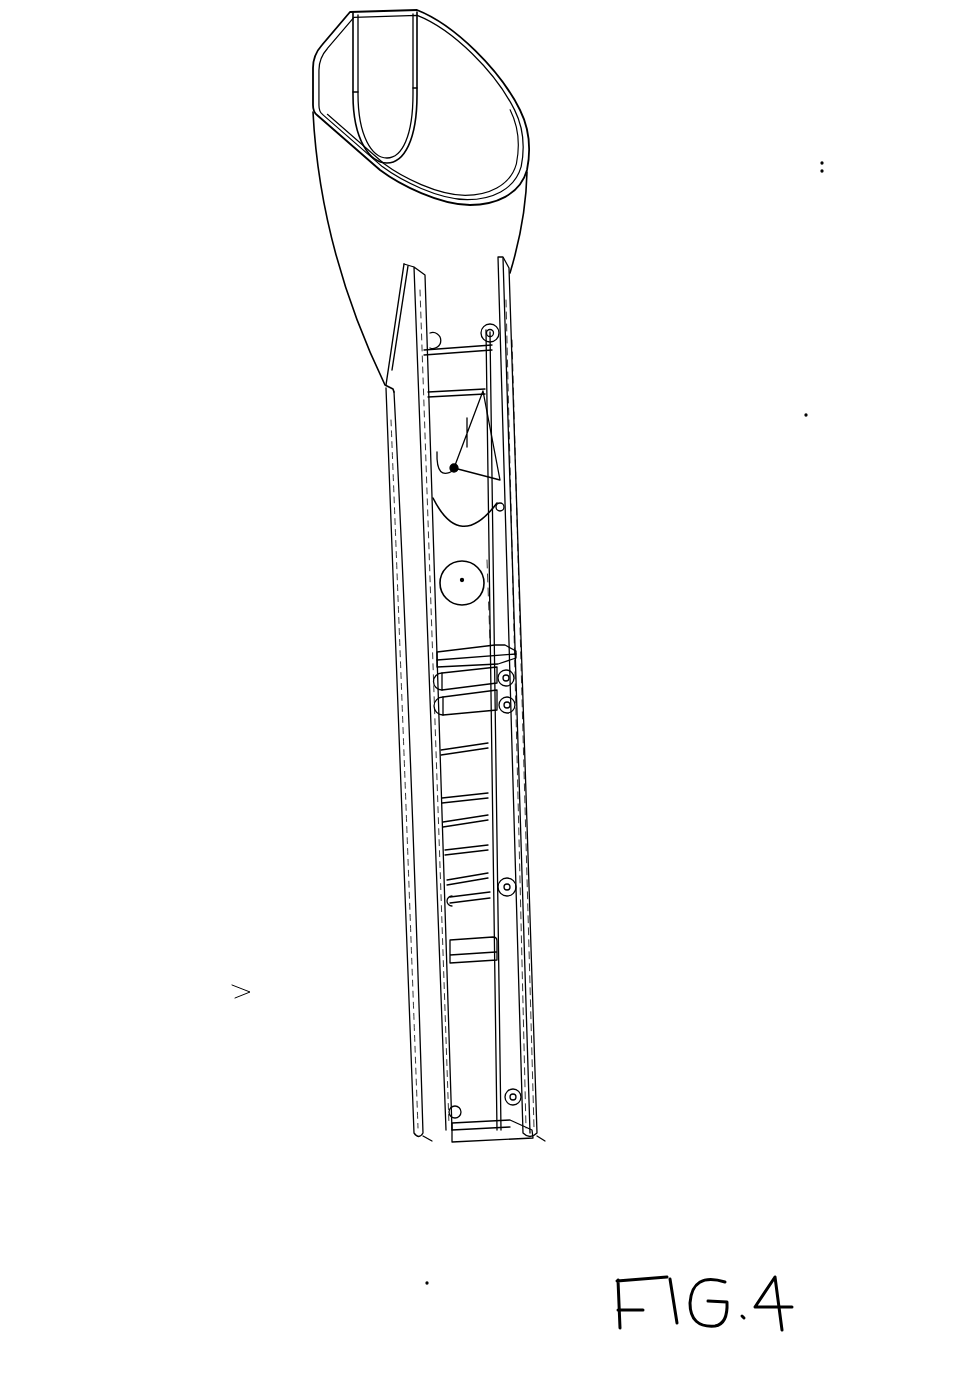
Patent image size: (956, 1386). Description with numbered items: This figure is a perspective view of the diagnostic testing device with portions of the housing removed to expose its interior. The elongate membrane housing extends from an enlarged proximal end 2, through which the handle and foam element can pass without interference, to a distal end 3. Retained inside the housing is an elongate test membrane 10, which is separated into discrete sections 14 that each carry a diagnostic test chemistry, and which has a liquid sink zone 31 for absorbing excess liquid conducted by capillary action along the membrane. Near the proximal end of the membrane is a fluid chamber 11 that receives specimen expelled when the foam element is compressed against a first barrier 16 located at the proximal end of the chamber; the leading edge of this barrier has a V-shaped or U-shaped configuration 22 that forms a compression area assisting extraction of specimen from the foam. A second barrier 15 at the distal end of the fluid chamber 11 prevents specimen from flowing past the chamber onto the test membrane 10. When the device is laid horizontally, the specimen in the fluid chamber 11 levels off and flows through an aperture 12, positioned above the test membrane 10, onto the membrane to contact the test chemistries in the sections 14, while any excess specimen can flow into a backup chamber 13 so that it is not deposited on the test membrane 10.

The proximal end 2 is at (295, 50).
The distal end 3 is at (403, 1117).
The test membrane 10 is at (463, 775).
The fluid chamber 11 is at (478, 618).
The aperture 12 is at (468, 578).
The backup chamber 13 is at (455, 447).
The discrete sections 14 is at (472, 833).
The second barrier 15 is at (466, 655).
The first barrier 16 is at (470, 502).
The V-shaped or U-shaped configuration 22 is at (457, 466).
The liquid sink zone 31 is at (477, 1030).